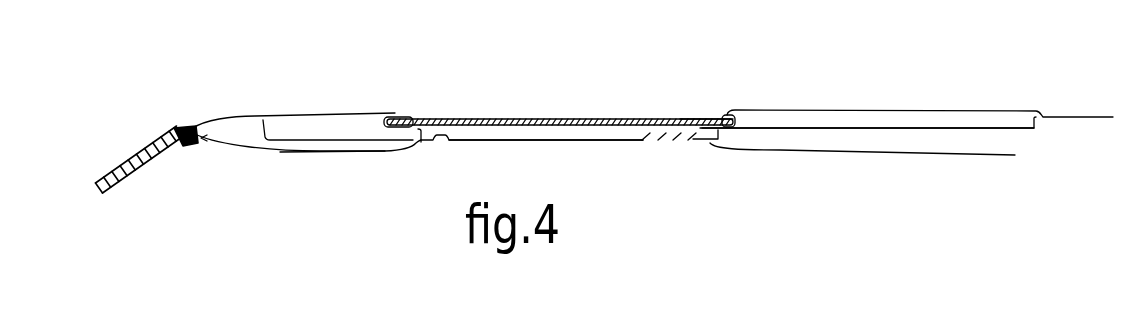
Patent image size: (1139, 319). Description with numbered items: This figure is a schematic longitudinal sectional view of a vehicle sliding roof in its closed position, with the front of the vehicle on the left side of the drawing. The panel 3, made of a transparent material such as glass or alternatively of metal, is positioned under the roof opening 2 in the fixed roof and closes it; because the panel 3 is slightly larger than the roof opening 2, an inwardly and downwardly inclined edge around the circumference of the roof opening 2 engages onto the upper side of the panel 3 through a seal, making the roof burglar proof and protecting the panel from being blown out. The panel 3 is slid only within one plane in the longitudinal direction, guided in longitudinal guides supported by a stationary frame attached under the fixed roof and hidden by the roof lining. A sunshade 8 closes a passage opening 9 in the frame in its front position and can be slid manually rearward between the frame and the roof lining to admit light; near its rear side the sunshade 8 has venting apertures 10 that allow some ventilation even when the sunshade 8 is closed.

The roof opening 2 is at (405, 118).
The panel 3 is at (510, 118).
The sunshade 8 is at (623, 140).
The passage opening 9 is at (687, 120).
The venting apertures 10 is at (675, 140).